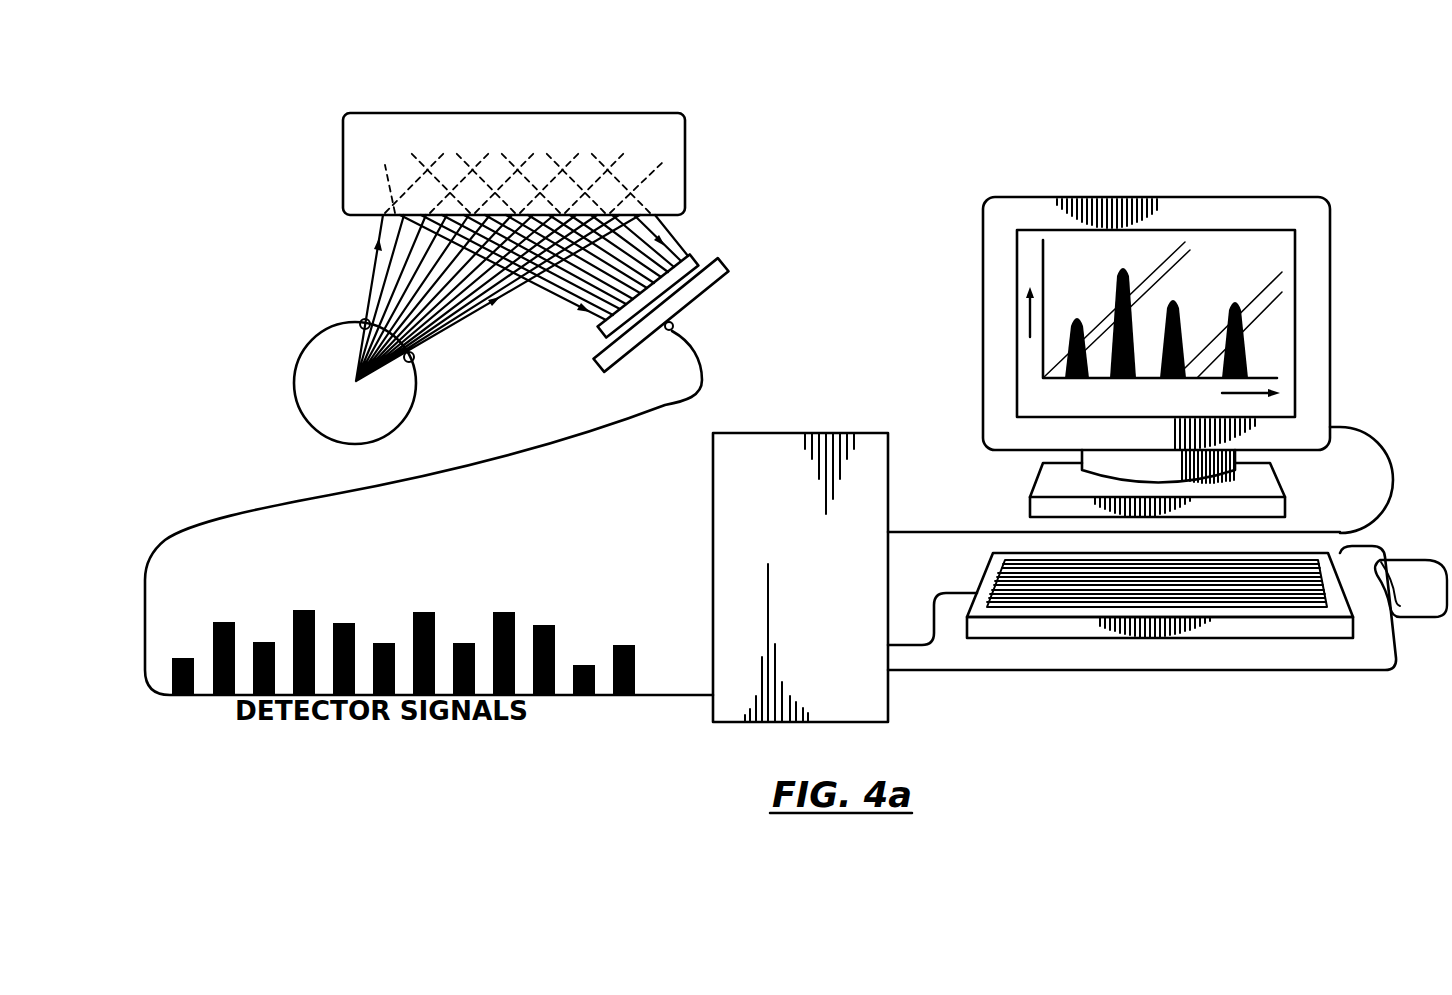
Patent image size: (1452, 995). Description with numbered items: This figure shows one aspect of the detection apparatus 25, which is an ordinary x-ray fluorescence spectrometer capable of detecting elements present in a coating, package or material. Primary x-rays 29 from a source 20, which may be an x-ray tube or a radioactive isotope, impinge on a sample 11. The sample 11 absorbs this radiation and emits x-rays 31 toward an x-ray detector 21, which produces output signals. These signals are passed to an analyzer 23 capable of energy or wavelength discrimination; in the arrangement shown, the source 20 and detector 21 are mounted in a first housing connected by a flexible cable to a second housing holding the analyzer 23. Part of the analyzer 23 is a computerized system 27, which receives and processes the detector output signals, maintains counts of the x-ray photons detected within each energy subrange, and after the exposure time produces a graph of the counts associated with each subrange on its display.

The sample 11 is at (538, 128).
The source 20 is at (337, 410).
The x-ray detector 21 is at (684, 293).
The analyzer 23 is at (845, 681).
The detection apparatus 25 is at (950, 203).
The computerized system 27 is at (1220, 187).
The x-rays 29 is at (360, 275).
The x-rays 31 is at (682, 236).